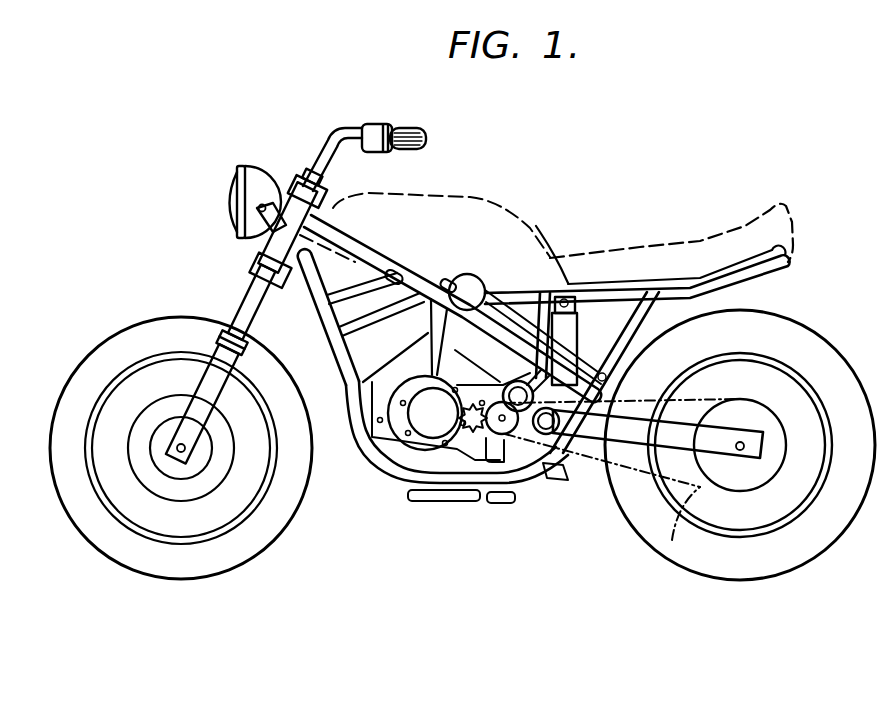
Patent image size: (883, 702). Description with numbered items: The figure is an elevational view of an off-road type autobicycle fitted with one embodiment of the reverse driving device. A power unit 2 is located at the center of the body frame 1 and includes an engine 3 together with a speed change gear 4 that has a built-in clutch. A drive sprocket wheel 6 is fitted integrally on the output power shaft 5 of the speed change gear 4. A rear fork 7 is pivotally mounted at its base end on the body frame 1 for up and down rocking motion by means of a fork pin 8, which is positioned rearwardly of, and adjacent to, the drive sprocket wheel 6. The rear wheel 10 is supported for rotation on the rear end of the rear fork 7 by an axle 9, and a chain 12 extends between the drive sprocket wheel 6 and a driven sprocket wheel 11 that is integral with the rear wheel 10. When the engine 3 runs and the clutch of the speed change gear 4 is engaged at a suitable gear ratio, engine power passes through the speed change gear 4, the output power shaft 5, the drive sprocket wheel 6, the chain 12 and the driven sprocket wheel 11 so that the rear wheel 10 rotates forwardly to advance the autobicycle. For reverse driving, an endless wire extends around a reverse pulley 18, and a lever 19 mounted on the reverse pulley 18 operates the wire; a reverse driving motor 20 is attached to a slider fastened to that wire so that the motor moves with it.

The body frame 1 is at (438, 287).
The power unit 2 is at (400, 386).
The engine 3 is at (384, 351).
The speed change gear 4 is at (463, 438).
The output power shaft 5 is at (502, 421).
The drive sprocket wheel 6 is at (487, 433).
The rear fork 7 is at (675, 438).
The fork pin 8 is at (550, 462).
The axle 9 is at (743, 442).
The rear wheel 10 is at (805, 533).
The driven sprocket wheel 11 is at (738, 481).
The chain 12 is at (672, 540).
The reverse pulley 18 is at (484, 291).
The lever 19 is at (450, 286).
The reverse driving motor 20 is at (587, 353).